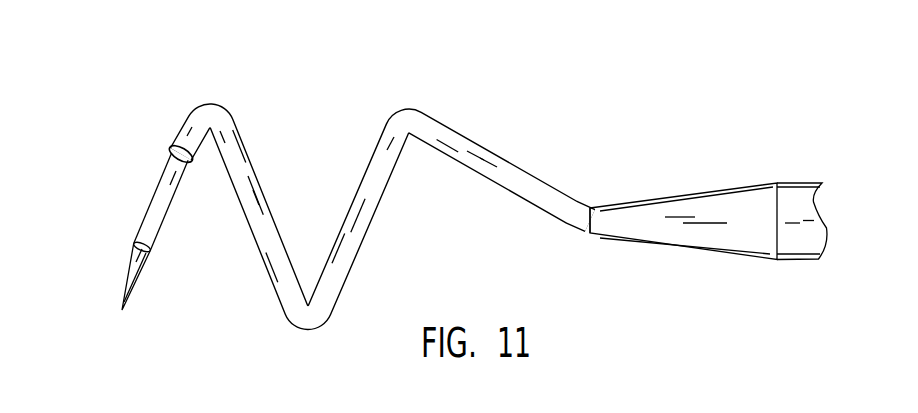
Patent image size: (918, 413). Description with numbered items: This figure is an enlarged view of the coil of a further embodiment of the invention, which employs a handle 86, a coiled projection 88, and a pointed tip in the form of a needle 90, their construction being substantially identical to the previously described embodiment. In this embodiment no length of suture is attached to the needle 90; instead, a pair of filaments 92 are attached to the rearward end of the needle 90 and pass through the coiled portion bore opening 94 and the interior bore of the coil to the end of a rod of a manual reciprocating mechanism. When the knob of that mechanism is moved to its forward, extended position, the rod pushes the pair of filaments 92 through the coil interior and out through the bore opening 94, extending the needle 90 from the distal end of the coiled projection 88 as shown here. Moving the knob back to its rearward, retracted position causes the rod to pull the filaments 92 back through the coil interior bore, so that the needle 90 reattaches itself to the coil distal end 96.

The handle 86 is at (788, 201).
The coiled projection 88 is at (395, 125).
The needle 90 is at (133, 267).
The filaments 92 is at (150, 215).
The bore opening 94 is at (162, 162).
The coil distal end 96 is at (197, 118).